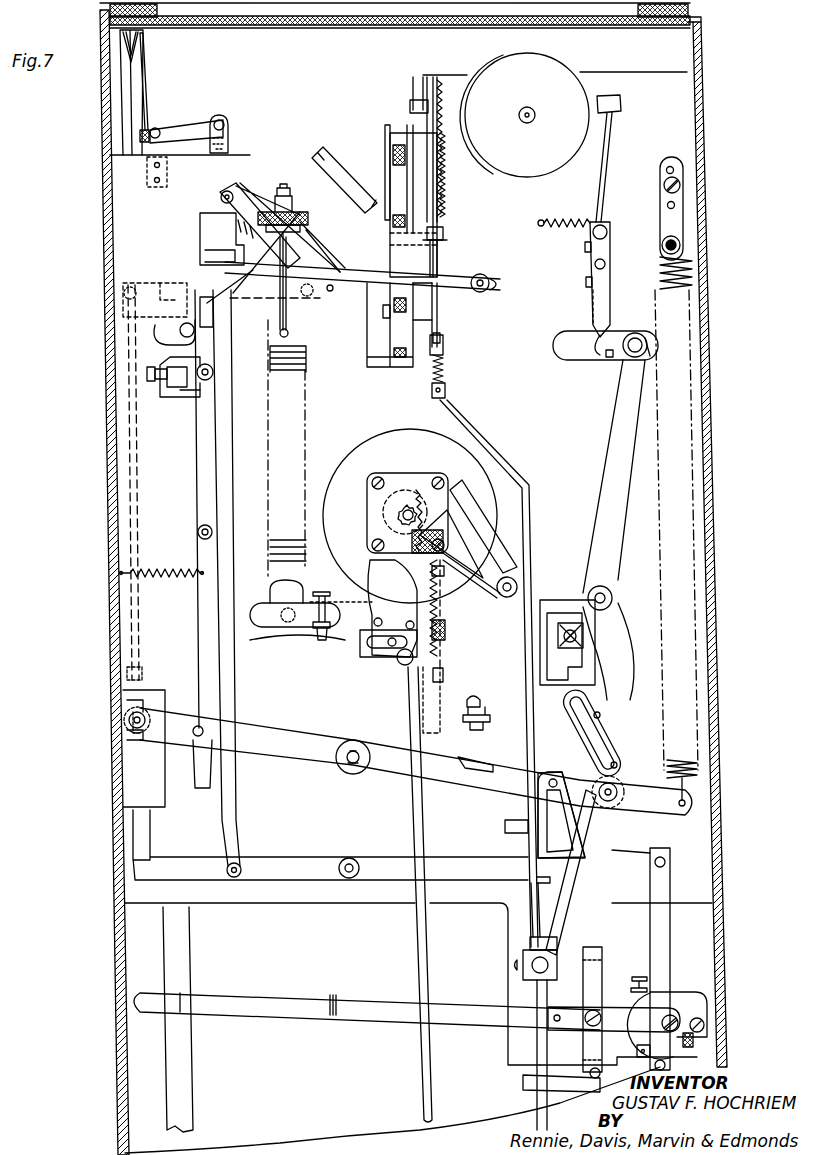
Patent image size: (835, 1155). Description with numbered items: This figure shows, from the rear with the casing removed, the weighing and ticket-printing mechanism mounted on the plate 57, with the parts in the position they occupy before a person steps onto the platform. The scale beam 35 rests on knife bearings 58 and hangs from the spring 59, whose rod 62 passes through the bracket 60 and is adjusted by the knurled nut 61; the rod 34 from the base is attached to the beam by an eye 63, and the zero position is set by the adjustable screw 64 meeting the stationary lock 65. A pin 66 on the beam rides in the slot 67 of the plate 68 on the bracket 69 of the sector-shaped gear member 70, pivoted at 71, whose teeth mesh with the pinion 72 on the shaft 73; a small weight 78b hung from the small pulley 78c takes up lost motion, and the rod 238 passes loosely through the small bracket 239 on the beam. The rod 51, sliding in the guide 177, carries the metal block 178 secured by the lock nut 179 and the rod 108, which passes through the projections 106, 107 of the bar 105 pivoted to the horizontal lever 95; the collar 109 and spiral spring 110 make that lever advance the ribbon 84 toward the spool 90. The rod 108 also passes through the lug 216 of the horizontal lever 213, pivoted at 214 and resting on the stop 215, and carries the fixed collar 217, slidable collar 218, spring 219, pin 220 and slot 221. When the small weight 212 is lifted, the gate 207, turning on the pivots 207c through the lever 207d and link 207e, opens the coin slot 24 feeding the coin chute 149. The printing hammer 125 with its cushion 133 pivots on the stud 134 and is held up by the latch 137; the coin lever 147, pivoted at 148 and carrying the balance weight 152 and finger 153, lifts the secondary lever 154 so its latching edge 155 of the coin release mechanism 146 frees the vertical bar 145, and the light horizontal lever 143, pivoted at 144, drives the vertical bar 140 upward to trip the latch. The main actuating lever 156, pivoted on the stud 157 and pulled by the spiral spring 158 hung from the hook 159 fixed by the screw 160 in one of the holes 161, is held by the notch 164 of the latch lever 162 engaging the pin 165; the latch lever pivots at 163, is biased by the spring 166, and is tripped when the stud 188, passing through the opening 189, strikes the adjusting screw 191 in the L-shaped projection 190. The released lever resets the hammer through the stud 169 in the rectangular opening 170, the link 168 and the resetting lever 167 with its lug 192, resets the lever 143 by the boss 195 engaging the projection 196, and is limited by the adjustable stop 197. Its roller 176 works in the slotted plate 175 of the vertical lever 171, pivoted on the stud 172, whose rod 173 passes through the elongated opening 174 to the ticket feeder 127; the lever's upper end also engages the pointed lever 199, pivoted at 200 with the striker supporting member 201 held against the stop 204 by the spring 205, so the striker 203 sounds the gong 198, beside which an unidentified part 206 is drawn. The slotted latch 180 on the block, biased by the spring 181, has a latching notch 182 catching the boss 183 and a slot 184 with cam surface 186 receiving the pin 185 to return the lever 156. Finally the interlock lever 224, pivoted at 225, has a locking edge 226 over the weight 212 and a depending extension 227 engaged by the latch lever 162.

The coin slot 24 is at (100, 12).
The coin chute 149 is at (120, 76).
The coin gate 207 is at (146, 70).
The pivots 207c is at (157, 128).
The lever 207d is at (196, 122).
The link 207e is at (231, 135).
The pivot 225 is at (222, 190).
The interlock lever 224 is at (258, 195).
The locking edge 226 is at (222, 197).
The small weight 212 is at (205, 222).
The printing hammer resetting lever 167 is at (137, 280).
The latch 137 is at (165, 283).
The knurled nut 61 is at (306, 220).
The plate 57 is at (283, 195).
The bracket 60 is at (305, 233).
The rod 62 is at (290, 330).
The printing hammer 125 is at (318, 155).
The cushion 133 is at (380, 182).
The ribbon spool 90 is at (385, 130).
The horizontal lever 95 is at (405, 222).
The ribbon 84 is at (392, 258).
The upper lateral projection 106 is at (450, 100).
The spiral spring 110 is at (440, 165).
The bar 105 is at (440, 145).
The collar 109 is at (447, 237).
The lower lateral projection 107 is at (447, 236).
The rod 108 is at (438, 265).
The lug 216 is at (481, 292).
The pivot 214 is at (493, 290).
The stop 215 is at (308, 293).
The horizontal lever 213 is at (345, 290).
The slot 221 is at (442, 337).
The small pin 220 is at (445, 342).
The slidable collar 218 is at (444, 349).
The small spiral spring 219 is at (446, 368).
The small collar 217 is at (447, 386).
The gong 198 is at (562, 82).
The striker 203 is at (622, 105).
The striker supporting member 201 is at (610, 238).
The pivot 200 is at (607, 266).
The stop 204 is at (586, 247).
The tab 206 is at (586, 282).
The small spiral spring 205 is at (560, 217).
The pointed lever 199 is at (592, 306).
The hook 159 is at (683, 223).
The screw 160 is at (682, 184).
The holes 161 is at (664, 203).
The elongated opening 174 is at (556, 345).
The short horizontal rod 173 is at (648, 340).
The ticket feeder 127 is at (648, 350).
The vertical lever 171 is at (605, 438).
The spiral spring 158 is at (680, 474).
The stud 172 is at (605, 596).
The knife bearings 58 is at (572, 632).
The stud 134 is at (175, 337).
The lug 192 is at (160, 345).
The adjusting screw 191 is at (152, 396).
The L-shaped projection 190 is at (160, 393).
The opening 189 is at (183, 398).
The stud 188 is at (215, 375).
The depending extension 227 is at (222, 312).
The vertical bar 140 is at (235, 478).
The link 168 is at (138, 464).
The pivot 163 is at (196, 535).
The light spiral spring 166 is at (165, 580).
The latch lever 162 is at (200, 637).
The spring 59 is at (302, 425).
The pinion 72 is at (400, 515).
The shaft 73 is at (415, 505).
The small pulley 78c is at (400, 500).
The sector-shaped gear member 70 is at (455, 510).
The rod 238 is at (445, 557).
The pivot 71 is at (516, 585).
The pin 66 is at (405, 600).
The plate 68 is at (372, 603).
The stationary lock 65 is at (321, 592).
The adjustable screw 64 is at (300, 625).
The scale beam 35 is at (350, 630).
The slot 67 is at (365, 650).
The eye 63 is at (398, 662).
The rod 34 is at (410, 943).
The bracket 69 is at (438, 600).
The small bracket 239 is at (448, 632).
The small weight 78b is at (448, 678).
The adjustable stop 197 is at (488, 720).
The main actuating lever 156 is at (318, 720).
The stud 157 is at (360, 740).
The notch 164 is at (198, 770).
The pin 165 is at (198, 725).
The stud 169 is at (130, 722).
The boss 195 is at (128, 738).
The rectangular opening 170 is at (135, 770).
The projection 196 is at (135, 828).
The light horizontal lever 143 is at (265, 856).
The pivot 144 is at (353, 858).
The boss 183 is at (507, 830).
The slot 184 is at (550, 805).
The slotted plate 175 is at (572, 730).
The pin 185 is at (568, 752).
The cam surface 186 is at (572, 824).
The roller 176 is at (618, 803).
The slotted latch 180 is at (573, 885).
The latching notch 182 is at (530, 885).
The spring 181 is at (545, 900).
The metal block 178 is at (552, 945).
The lock nut 179 is at (522, 975).
The rod 51 is at (537, 1124).
The guide 177 is at (530, 1088).
The coin lever 147 is at (384, 1012).
The pivot 148 is at (590, 1027).
The vertical bar 145 is at (666, 887).
The finger 153 is at (628, 985).
The secondary lever 154 is at (575, 995).
The latching edge 155 is at (683, 993).
The coin release mechanism 146 is at (714, 989).
The balance weight 152 is at (702, 1047).